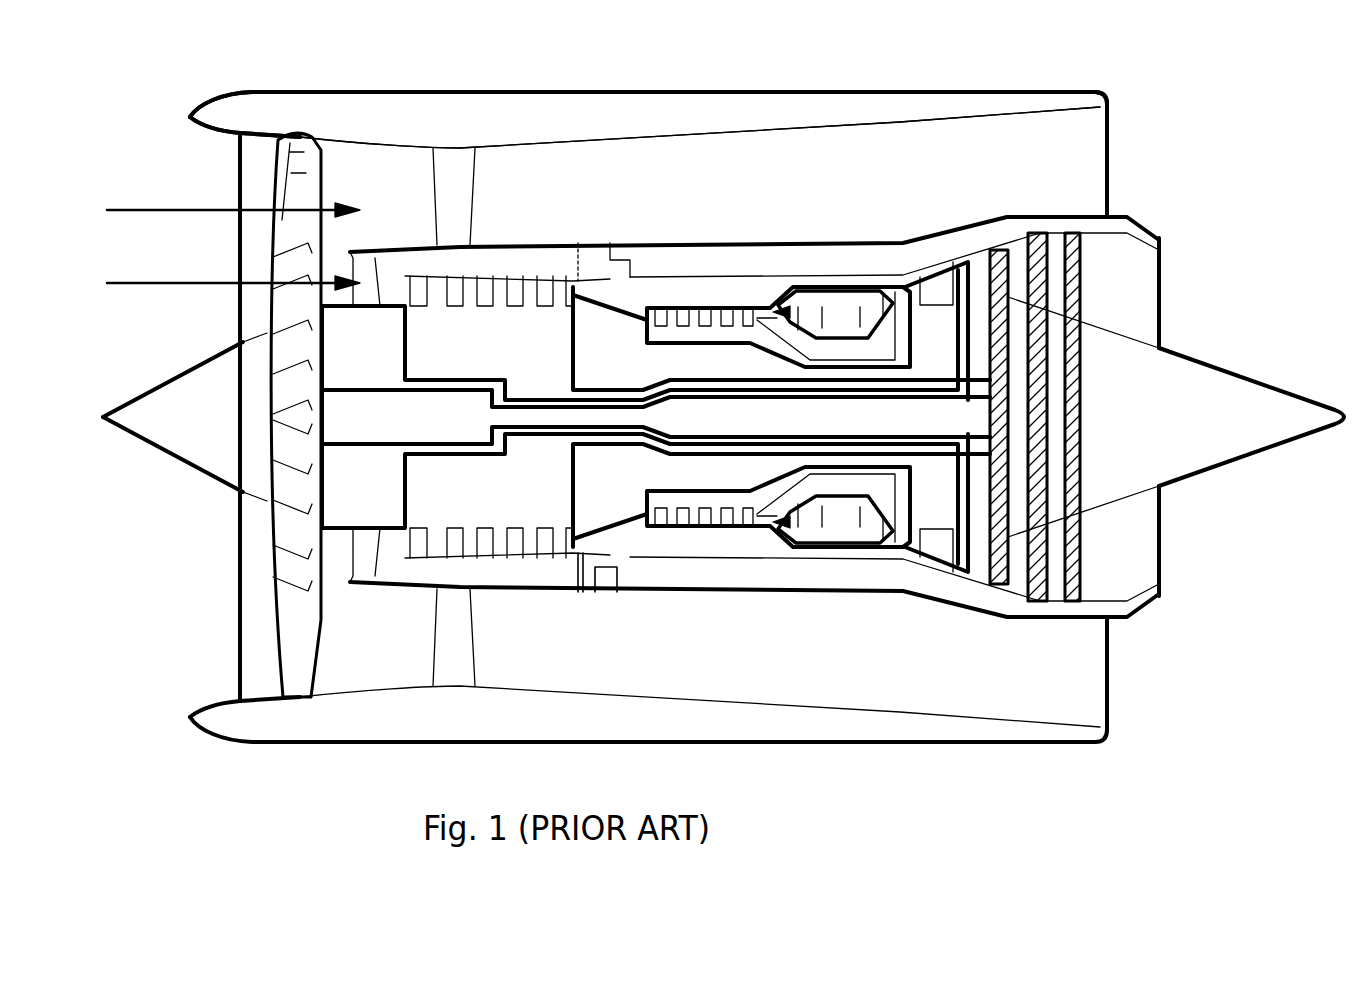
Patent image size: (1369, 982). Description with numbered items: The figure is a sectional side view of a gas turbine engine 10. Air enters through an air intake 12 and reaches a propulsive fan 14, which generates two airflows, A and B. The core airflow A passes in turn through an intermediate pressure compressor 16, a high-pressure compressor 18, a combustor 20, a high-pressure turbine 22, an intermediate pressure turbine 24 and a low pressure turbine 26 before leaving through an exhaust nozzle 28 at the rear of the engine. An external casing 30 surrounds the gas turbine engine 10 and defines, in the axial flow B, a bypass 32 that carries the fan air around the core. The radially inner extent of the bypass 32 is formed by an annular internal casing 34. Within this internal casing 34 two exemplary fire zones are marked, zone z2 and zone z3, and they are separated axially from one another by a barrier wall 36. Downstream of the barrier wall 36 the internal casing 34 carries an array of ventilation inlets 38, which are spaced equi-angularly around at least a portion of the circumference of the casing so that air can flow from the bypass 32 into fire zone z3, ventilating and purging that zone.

The gas turbine engine 10 is at (160, 85).
The air intake 12 is at (257, 190).
The propulsive fan 14 is at (287, 135).
The intermediate pressure compressor 16 is at (492, 337).
The high-pressure compressor 18 is at (688, 320).
The combustor 20 is at (835, 302).
The high-pressure turbine 22 is at (900, 297).
The intermediate pressure turbine 24 is at (965, 280).
The low pressure turbine 26 is at (1080, 260).
The exhaust nozzle 28 is at (1123, 273).
The external casing 30 is at (455, 143).
The bypass 32 is at (700, 193).
The annular internal casing 34 is at (820, 593).
The barrier wall 36 is at (578, 577).
The ventilation inlets 38 is at (617, 582).
The axial flow A is at (211, 287).
The axial flow B is at (211, 215).
The fire zone z2 is at (460, 253).
The fire zone z3 is at (623, 280).